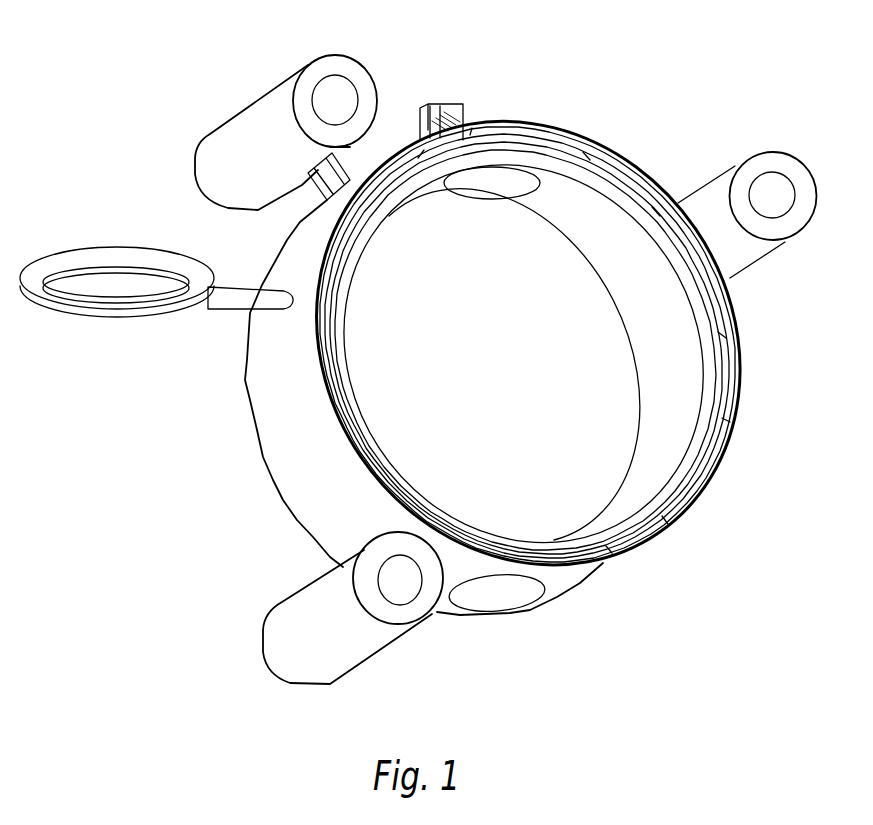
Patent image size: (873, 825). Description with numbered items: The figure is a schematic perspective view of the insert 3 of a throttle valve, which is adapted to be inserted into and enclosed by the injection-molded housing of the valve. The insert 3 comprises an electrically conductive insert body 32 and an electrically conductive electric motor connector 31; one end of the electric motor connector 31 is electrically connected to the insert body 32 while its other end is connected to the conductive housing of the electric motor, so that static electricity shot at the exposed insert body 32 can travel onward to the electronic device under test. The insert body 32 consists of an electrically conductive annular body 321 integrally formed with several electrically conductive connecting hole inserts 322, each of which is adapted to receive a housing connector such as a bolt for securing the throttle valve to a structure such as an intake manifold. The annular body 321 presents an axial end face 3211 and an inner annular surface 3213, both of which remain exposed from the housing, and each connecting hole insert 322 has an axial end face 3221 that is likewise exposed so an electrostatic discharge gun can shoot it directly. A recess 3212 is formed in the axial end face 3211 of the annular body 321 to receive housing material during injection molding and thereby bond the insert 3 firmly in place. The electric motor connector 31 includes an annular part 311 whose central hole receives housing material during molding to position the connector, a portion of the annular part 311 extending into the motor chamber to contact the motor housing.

The insert 3 is at (472, 34).
The electric motor connector 31 is at (185, 240).
The annular part 311 is at (33, 283).
The insert body 32 is at (167, 520).
The annular body 321 is at (302, 442).
The connecting hole insert 322 is at (318, 610).
The axial end face 3211 is at (537, 137).
The recess 3212 is at (603, 180).
The inner annular surface 3213 is at (657, 362).
The axial end face 3221 is at (753, 168).